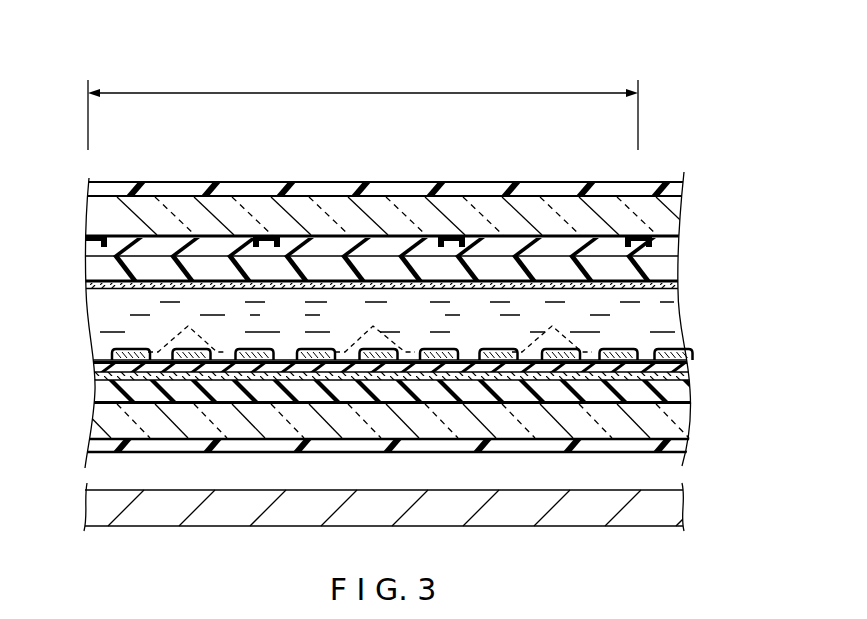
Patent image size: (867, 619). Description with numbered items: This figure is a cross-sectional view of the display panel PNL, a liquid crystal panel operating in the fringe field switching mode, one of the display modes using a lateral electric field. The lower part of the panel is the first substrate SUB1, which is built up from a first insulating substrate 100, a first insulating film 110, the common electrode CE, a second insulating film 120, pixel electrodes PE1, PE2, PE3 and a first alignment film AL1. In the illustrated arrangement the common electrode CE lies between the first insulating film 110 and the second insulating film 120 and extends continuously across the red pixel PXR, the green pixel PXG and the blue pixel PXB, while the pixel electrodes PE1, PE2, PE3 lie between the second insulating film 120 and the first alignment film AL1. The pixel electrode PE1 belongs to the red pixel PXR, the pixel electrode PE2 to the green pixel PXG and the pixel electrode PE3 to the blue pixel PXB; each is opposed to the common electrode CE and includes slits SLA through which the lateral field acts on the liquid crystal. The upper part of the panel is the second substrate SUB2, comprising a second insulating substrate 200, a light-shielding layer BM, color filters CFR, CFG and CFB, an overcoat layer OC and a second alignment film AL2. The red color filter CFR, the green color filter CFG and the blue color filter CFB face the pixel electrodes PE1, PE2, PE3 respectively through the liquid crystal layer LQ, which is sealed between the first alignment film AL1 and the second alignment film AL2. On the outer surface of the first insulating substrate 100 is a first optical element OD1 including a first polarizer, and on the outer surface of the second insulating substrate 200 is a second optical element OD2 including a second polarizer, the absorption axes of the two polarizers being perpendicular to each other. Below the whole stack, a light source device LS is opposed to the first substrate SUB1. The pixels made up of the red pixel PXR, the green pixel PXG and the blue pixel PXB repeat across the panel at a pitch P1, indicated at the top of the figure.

The display panel PNL is at (577, 77).
The pitch P1 is at (363, 108).
The first substrate SUB1 is at (702, 422).
The second substrate SUB2 is at (680, 246).
The first insulating substrate 100 is at (105, 428).
The first insulating film 110 is at (103, 392).
The common electrode CE is at (100, 369).
The second insulating film 120 is at (97, 362).
The first alignment film AL1 is at (97, 353).
The pixel electrode PE1 is at (192, 362).
The pixel electrode PE2 is at (316, 362).
The pixel electrode PE3 is at (499, 362).
The slits SLA is at (370, 326).
The liquid crystal layer LQ is at (663, 318).
The second alignment film AL2 is at (100, 285).
The overcoat layer OC is at (100, 266).
The light-shielding layer BM is at (112, 236).
The red color filter CFR is at (176, 250).
The green color filter CFG is at (344, 250).
The blue color filter CFB is at (553, 250).
The red pixel PXR is at (227, 273).
The green pixel PXG is at (390, 273).
The blue pixel PXB is at (588, 273).
The second insulating substrate 200 is at (102, 206).
The first optical element OD1 is at (680, 445).
The second optical element OD2 is at (676, 188).
The light source device LS is at (665, 512).